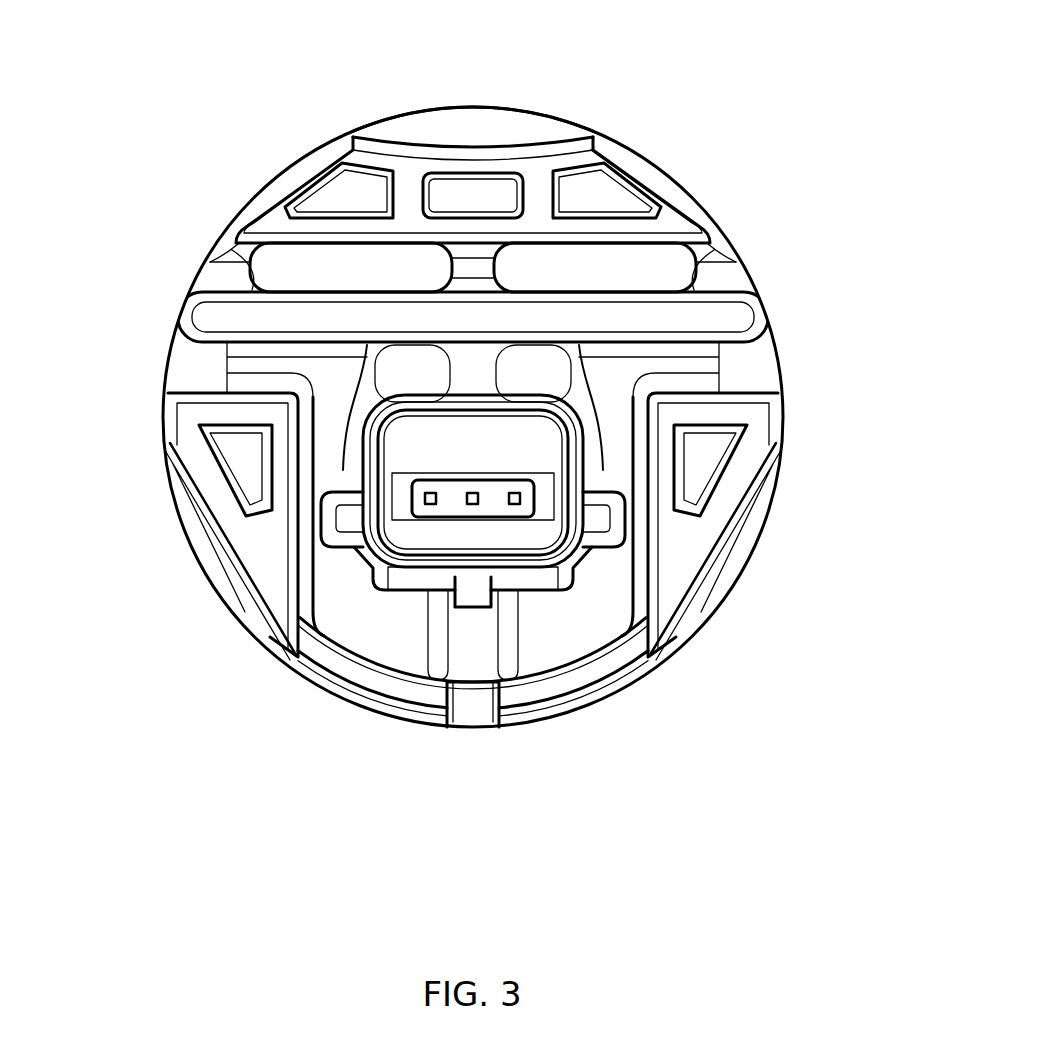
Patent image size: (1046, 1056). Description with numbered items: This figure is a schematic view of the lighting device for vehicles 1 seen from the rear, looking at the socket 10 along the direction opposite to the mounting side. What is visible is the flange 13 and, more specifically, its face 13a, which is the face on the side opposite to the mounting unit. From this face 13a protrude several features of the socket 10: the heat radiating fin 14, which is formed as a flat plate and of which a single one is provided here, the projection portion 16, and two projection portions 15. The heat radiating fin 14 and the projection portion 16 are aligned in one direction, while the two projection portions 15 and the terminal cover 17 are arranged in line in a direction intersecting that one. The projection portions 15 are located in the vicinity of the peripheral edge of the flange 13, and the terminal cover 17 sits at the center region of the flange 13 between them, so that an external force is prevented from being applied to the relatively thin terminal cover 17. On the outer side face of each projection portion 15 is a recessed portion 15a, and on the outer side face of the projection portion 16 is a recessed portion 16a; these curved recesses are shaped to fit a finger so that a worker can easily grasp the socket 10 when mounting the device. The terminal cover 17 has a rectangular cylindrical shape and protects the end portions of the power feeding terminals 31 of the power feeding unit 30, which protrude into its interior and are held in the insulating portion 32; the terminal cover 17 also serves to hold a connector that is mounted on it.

The lighting device for vehicles 1 is at (722, 97).
The socket 10 is at (172, 541).
The flange 13 is at (471, 104).
The face 13a is at (490, 130).
The heat radiating fin 14 is at (735, 314).
The projection portion 15 is at (273, 585).
The recessed portion 15a is at (224, 553).
The projection portion 16 is at (568, 160).
The recessed portion 16a is at (411, 140).
The terminal cover 17 is at (542, 570).
The power feeding unit 30 is at (377, 793).
The power feeding terminal 31 is at (472, 504).
The insulating portion 32 is at (450, 500).